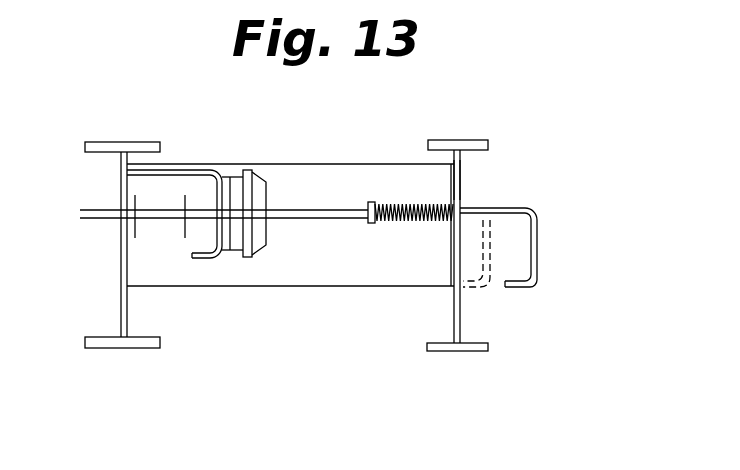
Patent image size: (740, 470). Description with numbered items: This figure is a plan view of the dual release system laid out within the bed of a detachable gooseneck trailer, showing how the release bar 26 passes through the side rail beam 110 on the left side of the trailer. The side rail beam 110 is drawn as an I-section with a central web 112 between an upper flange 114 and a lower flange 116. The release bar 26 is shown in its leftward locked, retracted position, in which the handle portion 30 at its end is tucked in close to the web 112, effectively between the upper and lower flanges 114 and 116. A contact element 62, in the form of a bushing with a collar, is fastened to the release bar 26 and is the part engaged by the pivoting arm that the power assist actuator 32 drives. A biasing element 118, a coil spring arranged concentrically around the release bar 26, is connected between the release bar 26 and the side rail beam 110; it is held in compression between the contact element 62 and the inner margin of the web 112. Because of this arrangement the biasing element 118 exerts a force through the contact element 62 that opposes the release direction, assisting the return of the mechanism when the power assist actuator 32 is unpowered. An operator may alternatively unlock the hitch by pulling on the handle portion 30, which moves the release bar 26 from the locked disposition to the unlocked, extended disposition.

The release bar 26 is at (302, 220).
The handle portion 30 is at (534, 252).
The power assist actuator 32 is at (260, 183).
The contact element 62 is at (371, 204).
The side rail beam 110 is at (470, 305).
The web 112 is at (463, 185).
The upper flange 114 is at (474, 140).
The lower flange 116 is at (473, 352).
The biasing element 118 is at (407, 221).